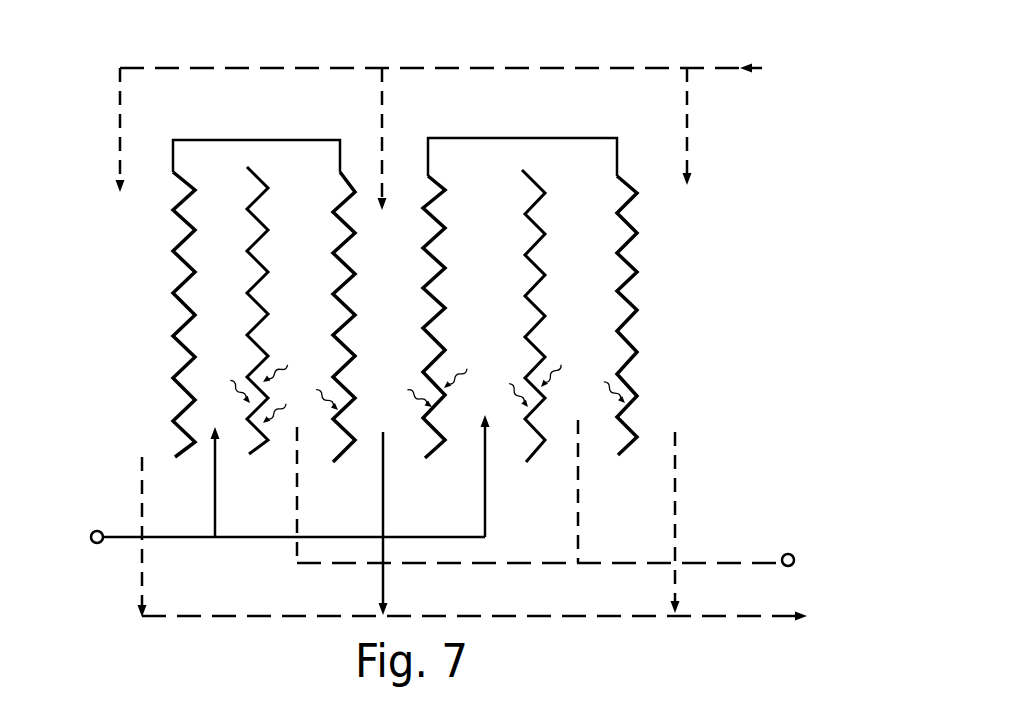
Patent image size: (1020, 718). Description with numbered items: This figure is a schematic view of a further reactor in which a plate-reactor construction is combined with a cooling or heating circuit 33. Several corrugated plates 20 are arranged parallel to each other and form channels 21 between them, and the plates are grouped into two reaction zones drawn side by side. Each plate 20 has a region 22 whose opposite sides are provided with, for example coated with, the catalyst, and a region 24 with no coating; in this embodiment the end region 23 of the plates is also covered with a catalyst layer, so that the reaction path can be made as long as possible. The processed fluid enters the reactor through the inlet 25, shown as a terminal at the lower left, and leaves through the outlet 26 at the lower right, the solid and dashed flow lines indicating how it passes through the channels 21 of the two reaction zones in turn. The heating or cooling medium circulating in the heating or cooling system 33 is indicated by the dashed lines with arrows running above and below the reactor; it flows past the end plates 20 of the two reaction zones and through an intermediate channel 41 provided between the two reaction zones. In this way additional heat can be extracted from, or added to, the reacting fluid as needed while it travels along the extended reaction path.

The plate 20 is at (630, 405).
The channel 21 is at (593, 345).
The catalyst-coated region 22 is at (160, 303).
The end region 23 is at (188, 228).
The uncoated region 24 is at (163, 417).
The inlet 25 is at (92, 540).
The outlet 26 is at (792, 556).
The cooling or heating circuit 33 is at (590, 68).
The intermediate channel 41 is at (398, 324).